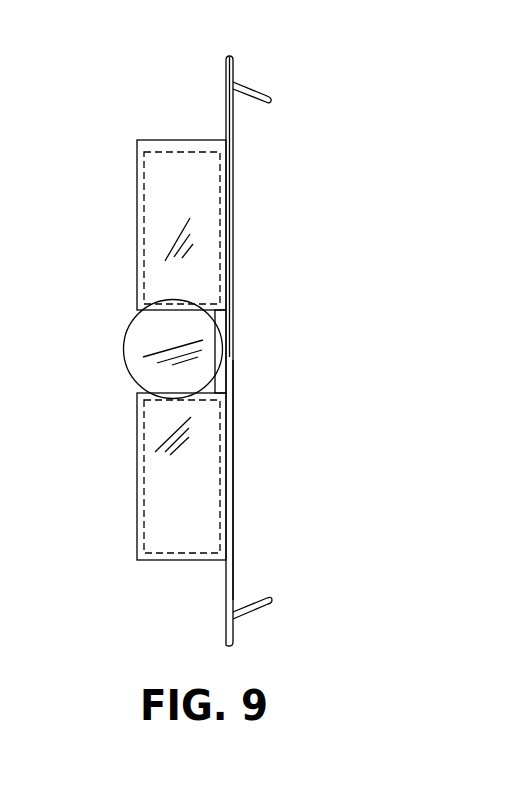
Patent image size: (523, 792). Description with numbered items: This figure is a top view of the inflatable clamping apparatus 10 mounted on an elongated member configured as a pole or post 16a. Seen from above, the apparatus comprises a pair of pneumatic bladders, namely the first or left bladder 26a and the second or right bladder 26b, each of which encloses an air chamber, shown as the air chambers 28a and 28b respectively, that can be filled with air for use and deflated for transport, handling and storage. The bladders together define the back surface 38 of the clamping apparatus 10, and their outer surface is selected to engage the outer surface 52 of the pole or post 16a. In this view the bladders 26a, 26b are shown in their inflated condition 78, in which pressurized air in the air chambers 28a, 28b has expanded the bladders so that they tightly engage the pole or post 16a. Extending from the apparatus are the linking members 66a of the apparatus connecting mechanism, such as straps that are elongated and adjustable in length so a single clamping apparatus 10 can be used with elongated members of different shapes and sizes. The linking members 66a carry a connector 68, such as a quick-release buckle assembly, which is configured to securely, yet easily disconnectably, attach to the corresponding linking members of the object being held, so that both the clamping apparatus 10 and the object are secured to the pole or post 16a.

The inflatable clamping apparatus 10 is at (258, 248).
The pole or post 16a is at (148, 338).
The first/left bladder 26a is at (137, 226).
The second/right bladder 26b is at (137, 522).
The air chamber 28a is at (163, 199).
The air chamber 28b is at (172, 488).
The back surface 38 is at (236, 298).
The outer surface of the elongated member 52 is at (121, 360).
The linking members of the apparatus connecting mechanism 66a is at (233, 124).
The connector 68 is at (226, 60).
The inflated condition 78 is at (245, 425).